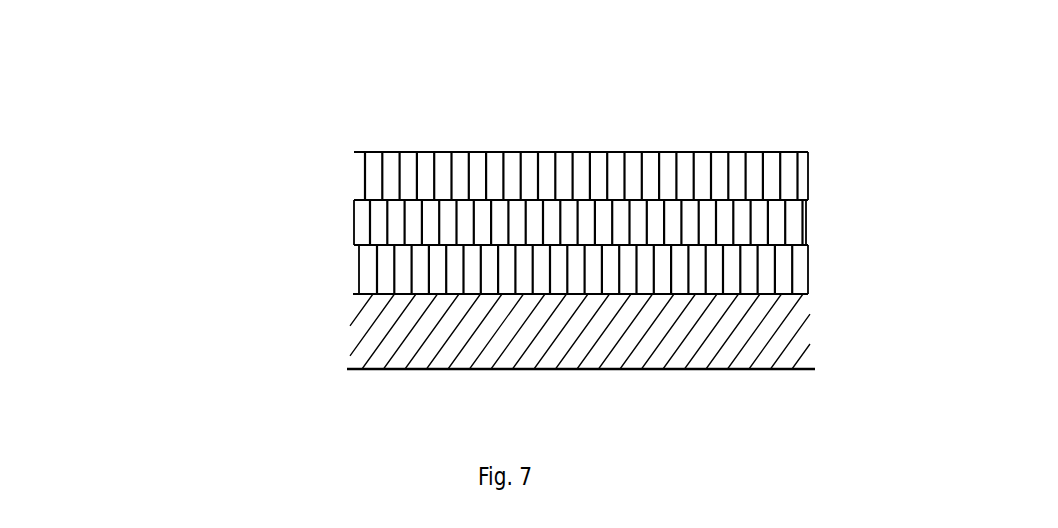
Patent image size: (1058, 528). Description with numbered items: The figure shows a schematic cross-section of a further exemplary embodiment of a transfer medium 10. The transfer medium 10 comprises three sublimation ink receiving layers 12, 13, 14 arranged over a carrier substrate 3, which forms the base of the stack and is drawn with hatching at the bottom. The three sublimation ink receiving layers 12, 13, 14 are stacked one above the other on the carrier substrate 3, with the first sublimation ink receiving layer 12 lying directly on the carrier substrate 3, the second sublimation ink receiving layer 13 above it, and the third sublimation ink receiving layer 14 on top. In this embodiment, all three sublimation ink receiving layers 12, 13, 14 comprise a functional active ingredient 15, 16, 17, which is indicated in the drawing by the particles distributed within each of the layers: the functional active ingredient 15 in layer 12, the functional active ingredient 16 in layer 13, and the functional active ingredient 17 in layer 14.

The transfer medium 10 is at (178, 128).
The sublimation ink receiving layer 14 is at (367, 175).
The sublimation ink receiving layer 13 is at (355, 223).
The sublimation ink receiving layer 12 is at (360, 275).
The functional active ingredient 17 is at (808, 183).
The functional active ingredient 16 is at (808, 226).
The functional active ingredient 15 is at (808, 275).
The carrier substrate 3 is at (793, 335).